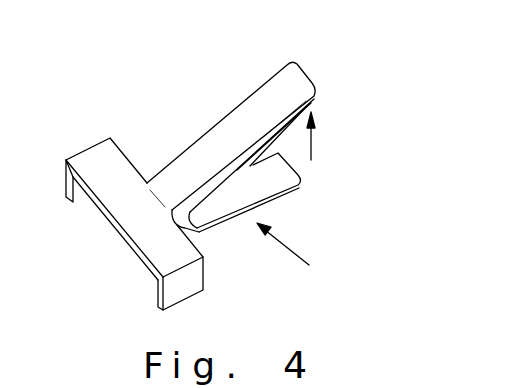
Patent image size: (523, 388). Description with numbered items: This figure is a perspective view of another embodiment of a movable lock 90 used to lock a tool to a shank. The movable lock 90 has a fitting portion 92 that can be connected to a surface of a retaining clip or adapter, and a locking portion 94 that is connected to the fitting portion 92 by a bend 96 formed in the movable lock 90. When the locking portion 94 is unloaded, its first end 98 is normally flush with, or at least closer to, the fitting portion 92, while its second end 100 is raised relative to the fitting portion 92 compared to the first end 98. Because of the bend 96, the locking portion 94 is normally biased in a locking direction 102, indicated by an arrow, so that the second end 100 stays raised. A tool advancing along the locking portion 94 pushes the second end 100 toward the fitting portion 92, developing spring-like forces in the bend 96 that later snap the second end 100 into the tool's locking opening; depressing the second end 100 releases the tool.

The movable lock 90 is at (297, 255).
The fitting portion 92 is at (270, 189).
The locking portion 94 is at (206, 133).
The bend 96 is at (200, 230).
The first end 98 is at (132, 250).
The second end 100 is at (306, 73).
The locking direction 102 is at (313, 143).